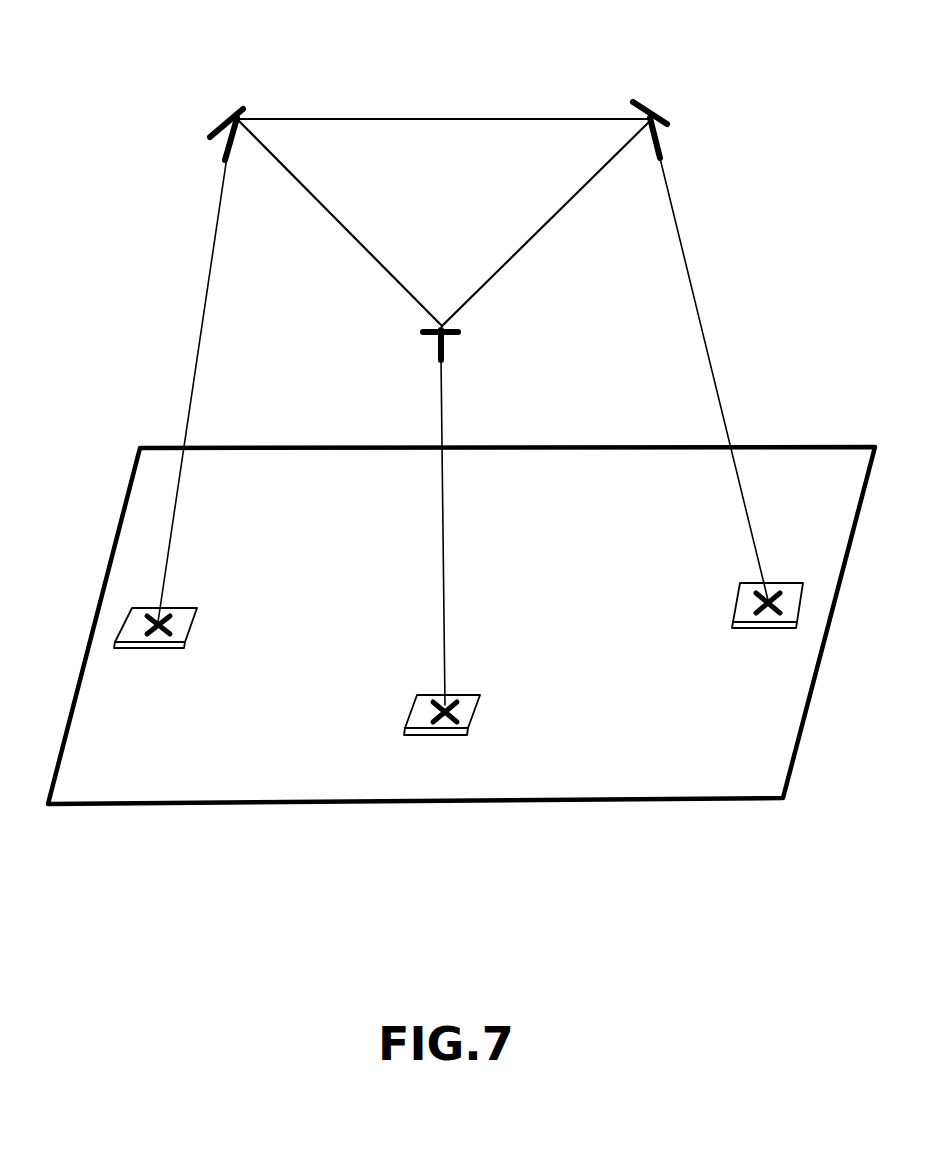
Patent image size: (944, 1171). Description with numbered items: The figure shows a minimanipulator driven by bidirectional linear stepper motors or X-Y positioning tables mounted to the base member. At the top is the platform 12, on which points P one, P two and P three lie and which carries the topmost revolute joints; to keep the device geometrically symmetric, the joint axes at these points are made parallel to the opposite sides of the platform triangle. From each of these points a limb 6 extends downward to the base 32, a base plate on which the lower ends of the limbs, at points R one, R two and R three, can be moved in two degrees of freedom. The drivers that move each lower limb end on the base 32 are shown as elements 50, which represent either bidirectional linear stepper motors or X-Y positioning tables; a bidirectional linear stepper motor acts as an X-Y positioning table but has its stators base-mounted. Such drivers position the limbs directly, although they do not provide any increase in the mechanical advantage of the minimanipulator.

The platform 12 is at (450, 132).
The limb 6 is at (740, 325).
The base 32 is at (630, 733).
The bidirectional linear stepper motors or X-Y positioning tables 50 is at (190, 628).